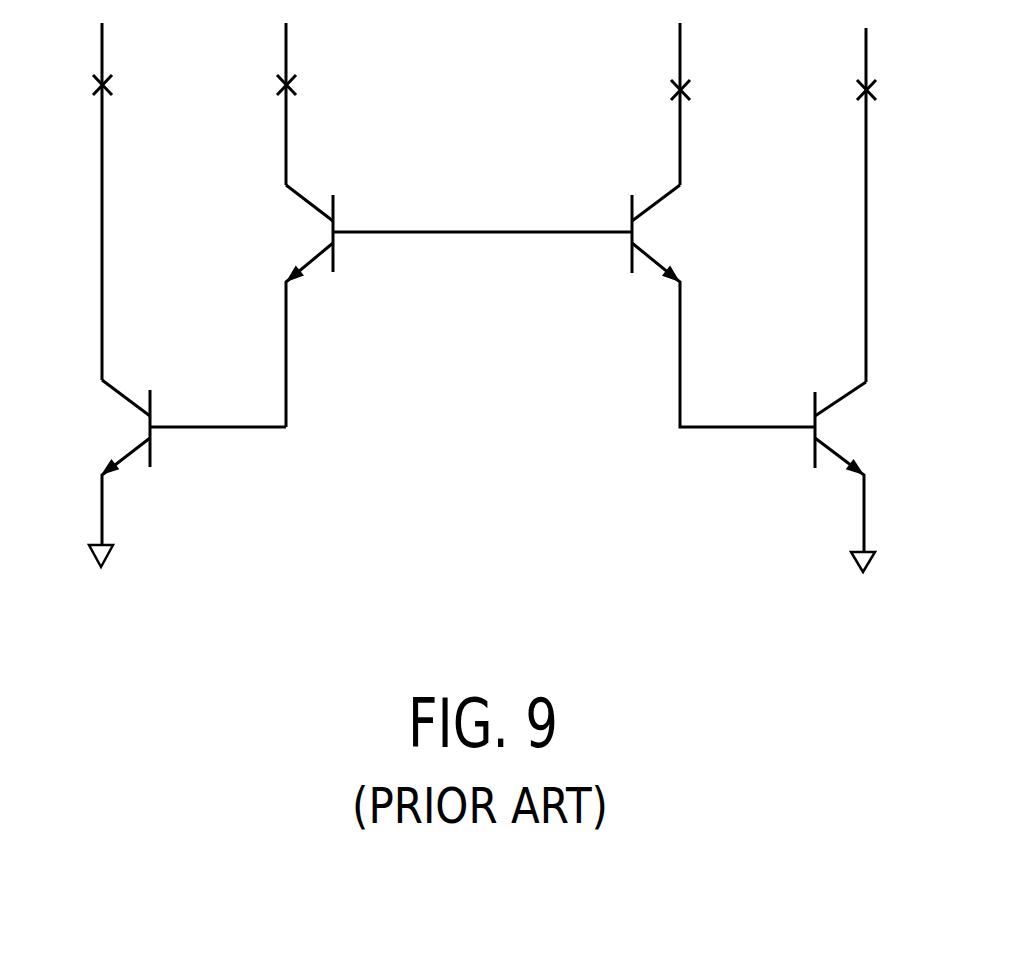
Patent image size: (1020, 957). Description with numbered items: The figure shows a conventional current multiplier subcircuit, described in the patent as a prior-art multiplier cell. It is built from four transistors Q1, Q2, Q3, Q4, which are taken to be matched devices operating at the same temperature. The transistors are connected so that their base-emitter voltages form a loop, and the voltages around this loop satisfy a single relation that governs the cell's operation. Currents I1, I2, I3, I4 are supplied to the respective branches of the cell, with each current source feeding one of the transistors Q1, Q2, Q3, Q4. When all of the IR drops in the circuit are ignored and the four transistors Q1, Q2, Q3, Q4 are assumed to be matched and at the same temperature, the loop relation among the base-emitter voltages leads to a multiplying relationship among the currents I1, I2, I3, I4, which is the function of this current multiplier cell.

The current I1 is at (131, 201).
The current I2 is at (314, 104).
The current I3 is at (708, 104).
The current I4 is at (890, 205).
The transistor Q1 is at (164, 473).
The transistor Q2 is at (429, 306).
The transistor Q3 is at (723, 306).
The transistor Q4 is at (872, 477).